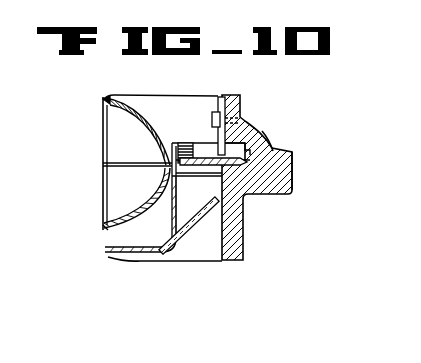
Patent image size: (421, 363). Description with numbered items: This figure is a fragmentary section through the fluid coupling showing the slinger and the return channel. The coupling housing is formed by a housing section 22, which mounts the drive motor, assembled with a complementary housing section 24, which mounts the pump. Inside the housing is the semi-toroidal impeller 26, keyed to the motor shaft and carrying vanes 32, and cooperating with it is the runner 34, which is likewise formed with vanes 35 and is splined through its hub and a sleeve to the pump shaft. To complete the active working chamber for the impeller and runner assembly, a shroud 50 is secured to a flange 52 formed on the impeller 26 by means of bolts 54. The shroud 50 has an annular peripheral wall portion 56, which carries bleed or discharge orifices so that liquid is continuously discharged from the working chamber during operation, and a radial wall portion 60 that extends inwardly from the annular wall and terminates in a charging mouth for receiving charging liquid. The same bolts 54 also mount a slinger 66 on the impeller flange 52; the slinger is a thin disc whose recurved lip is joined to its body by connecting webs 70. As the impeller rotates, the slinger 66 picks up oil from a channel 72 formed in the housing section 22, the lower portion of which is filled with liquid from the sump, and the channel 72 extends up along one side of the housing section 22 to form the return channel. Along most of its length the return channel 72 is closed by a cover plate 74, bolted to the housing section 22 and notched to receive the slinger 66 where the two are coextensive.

The housing section 22 is at (289, 168).
The housing section 24 is at (291, 191).
The impeller 26 is at (99, 101).
The vanes 32 is at (107, 142).
The runner 34 is at (103, 232).
The vanes 35 is at (107, 165).
The shroud 50 is at (104, 257).
The flange 52 is at (176, 143).
The bolts 54 is at (191, 166).
The annular peripheral wall portion 56 is at (178, 214).
The radial wall portion 60 is at (127, 253).
The slinger 66 is at (246, 167).
The connecting webs 70 is at (272, 157).
The channel 72 is at (247, 151).
The cover plate 74 is at (216, 113).